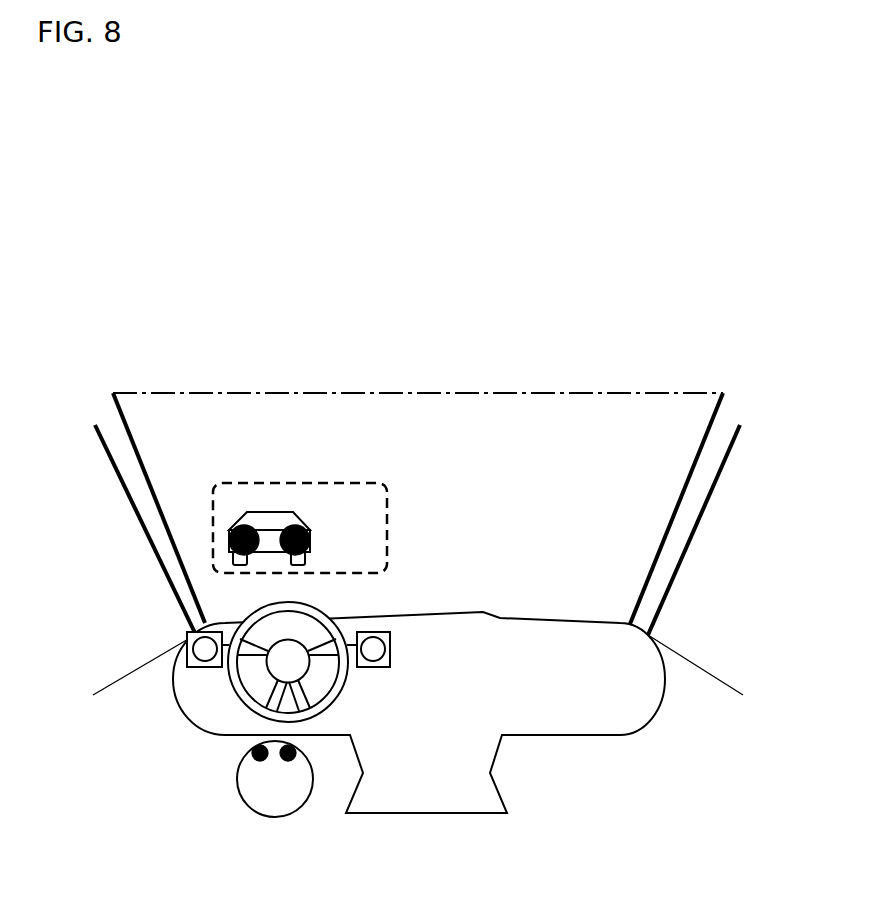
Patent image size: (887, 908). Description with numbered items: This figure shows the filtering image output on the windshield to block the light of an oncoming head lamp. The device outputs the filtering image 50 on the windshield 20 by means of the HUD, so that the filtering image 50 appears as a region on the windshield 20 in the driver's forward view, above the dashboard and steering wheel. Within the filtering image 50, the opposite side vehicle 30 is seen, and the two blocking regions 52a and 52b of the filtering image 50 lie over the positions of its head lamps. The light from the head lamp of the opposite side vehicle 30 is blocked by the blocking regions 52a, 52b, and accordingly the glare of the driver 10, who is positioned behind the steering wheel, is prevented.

The driver 10 is at (272, 803).
The windshield 20 is at (579, 393).
The opposite side vehicle 30 is at (270, 439).
The filtering image 50 is at (374, 483).
The blocking region 52a is at (241, 514).
The blocking region 52b is at (295, 514).